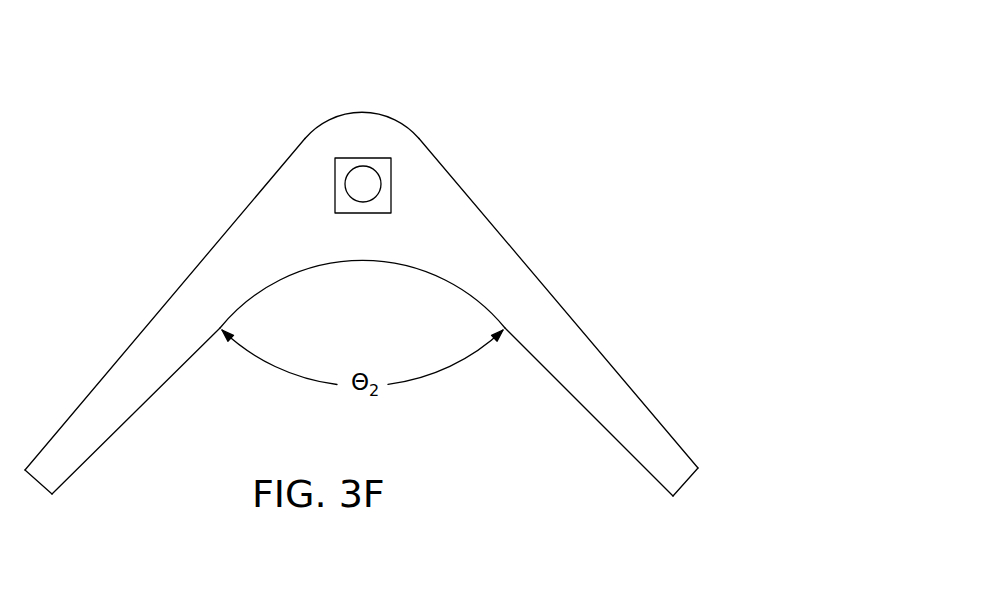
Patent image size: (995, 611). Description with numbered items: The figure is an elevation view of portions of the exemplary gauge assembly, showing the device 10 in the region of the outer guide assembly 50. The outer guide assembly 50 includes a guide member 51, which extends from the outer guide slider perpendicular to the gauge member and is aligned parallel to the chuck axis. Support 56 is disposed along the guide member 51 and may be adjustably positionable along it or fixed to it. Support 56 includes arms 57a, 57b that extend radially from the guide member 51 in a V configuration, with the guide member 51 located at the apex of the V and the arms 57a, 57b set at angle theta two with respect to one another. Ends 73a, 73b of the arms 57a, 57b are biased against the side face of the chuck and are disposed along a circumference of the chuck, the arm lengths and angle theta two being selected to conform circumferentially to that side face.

The device 10 is at (705, 92).
The outer guide assembly 50 is at (444, 178).
The guide member 51 is at (357, 181).
The support 56 is at (517, 280).
The arm 57a is at (152, 337).
The arm 57b is at (607, 363).
The end 73a is at (43, 487).
The end 73b is at (685, 482).